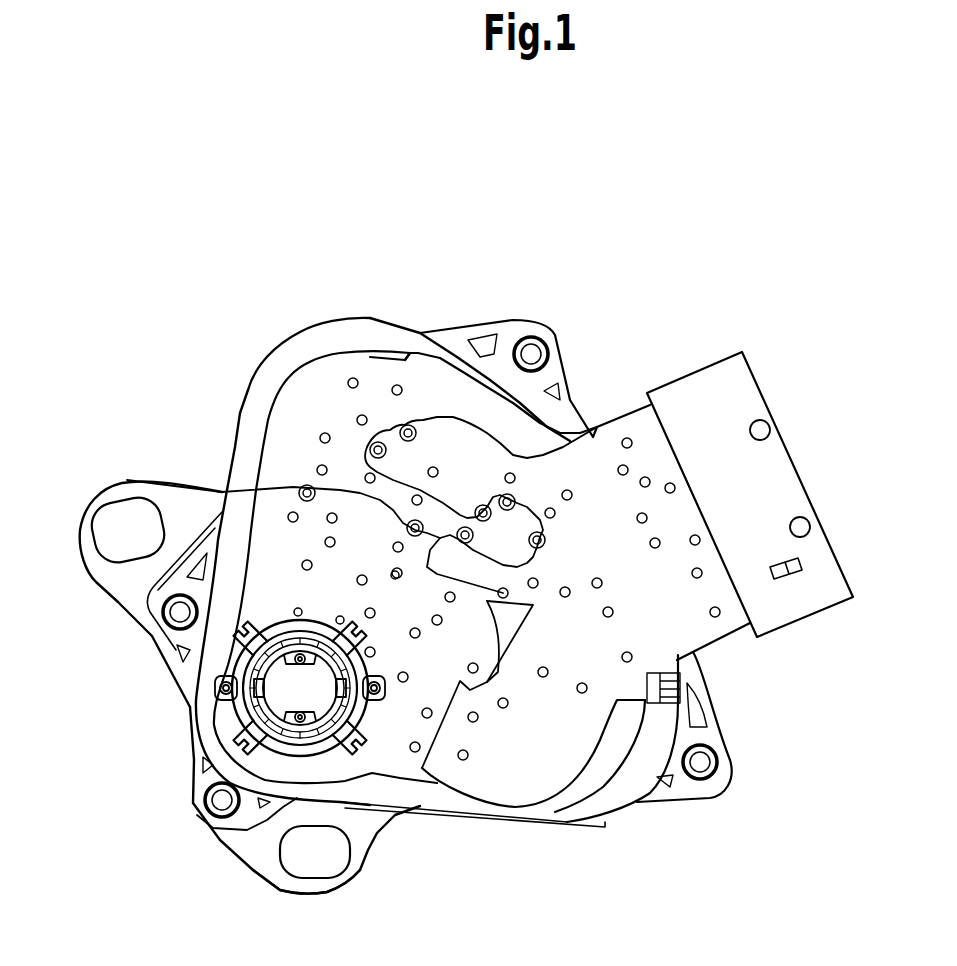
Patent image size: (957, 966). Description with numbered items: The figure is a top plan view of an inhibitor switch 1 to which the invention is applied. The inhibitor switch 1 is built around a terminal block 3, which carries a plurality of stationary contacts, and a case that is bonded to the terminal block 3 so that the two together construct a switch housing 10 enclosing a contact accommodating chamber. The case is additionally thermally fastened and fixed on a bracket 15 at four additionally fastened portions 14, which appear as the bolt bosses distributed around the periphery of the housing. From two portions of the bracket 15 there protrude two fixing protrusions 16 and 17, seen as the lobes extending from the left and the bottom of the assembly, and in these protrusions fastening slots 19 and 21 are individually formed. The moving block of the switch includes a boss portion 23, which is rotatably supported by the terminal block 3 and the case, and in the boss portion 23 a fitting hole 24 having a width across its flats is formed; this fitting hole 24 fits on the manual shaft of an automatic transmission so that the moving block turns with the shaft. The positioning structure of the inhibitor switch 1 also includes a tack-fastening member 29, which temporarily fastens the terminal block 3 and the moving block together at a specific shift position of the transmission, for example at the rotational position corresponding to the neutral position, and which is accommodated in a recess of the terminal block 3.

The inhibitor switch 1 is at (548, 268).
The terminal block 3 is at (318, 384).
The switch housing 10 is at (370, 316).
The additionally fastened portions 14 is at (532, 356).
The bracket 15 is at (380, 835).
The fixing protrusion 16 is at (160, 480).
The fixing protrusion 17 is at (357, 873).
The fastening slot 19 is at (103, 547).
The fastening slot 21 is at (290, 863).
The boss portion 23 is at (322, 735).
The fitting hole 24 is at (450, 813).
The tack-fastening member 29 is at (308, 608).